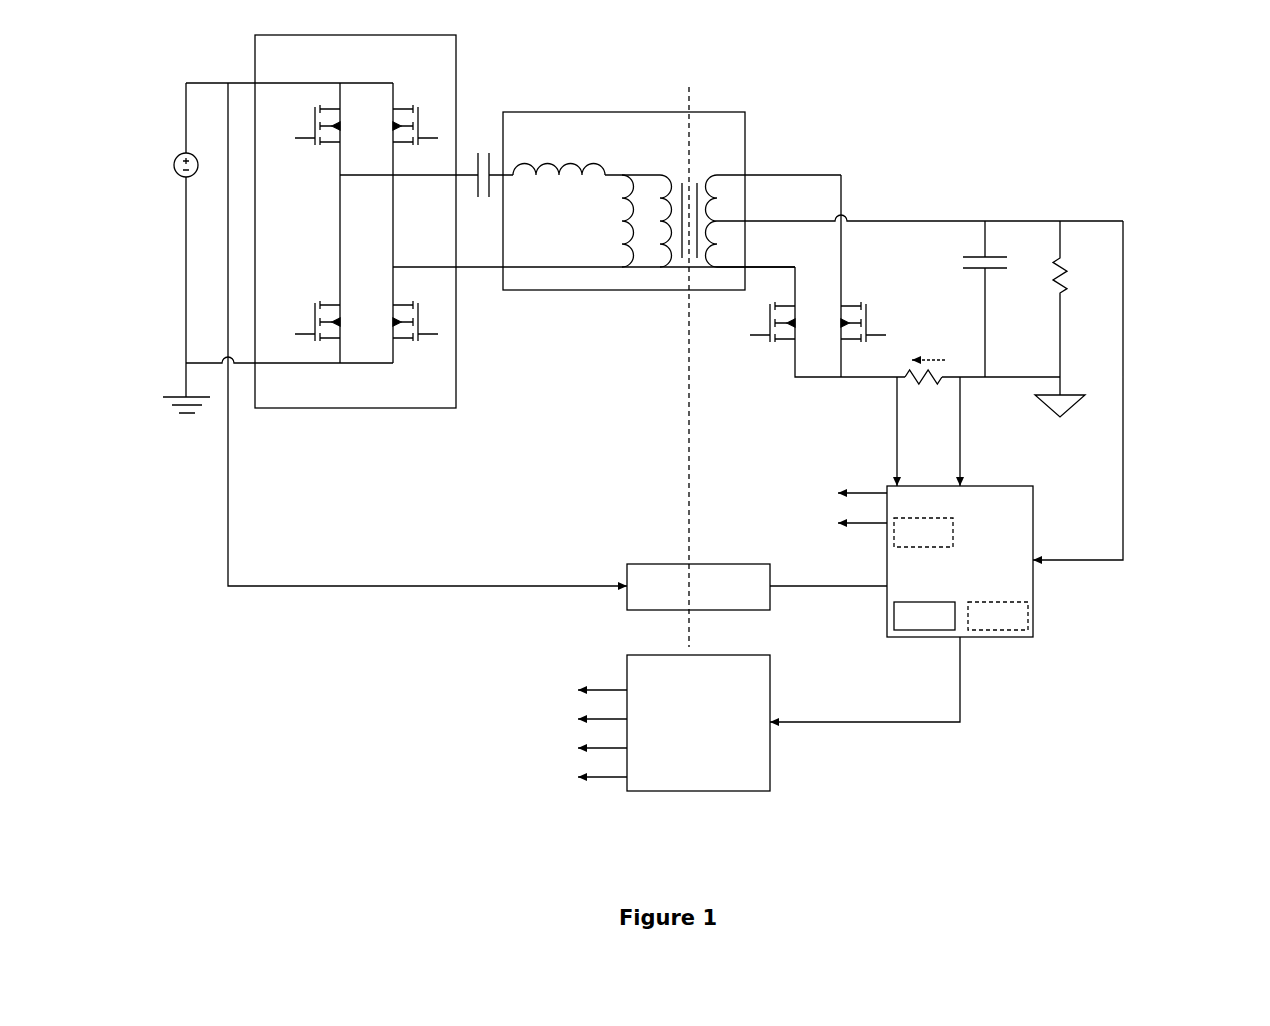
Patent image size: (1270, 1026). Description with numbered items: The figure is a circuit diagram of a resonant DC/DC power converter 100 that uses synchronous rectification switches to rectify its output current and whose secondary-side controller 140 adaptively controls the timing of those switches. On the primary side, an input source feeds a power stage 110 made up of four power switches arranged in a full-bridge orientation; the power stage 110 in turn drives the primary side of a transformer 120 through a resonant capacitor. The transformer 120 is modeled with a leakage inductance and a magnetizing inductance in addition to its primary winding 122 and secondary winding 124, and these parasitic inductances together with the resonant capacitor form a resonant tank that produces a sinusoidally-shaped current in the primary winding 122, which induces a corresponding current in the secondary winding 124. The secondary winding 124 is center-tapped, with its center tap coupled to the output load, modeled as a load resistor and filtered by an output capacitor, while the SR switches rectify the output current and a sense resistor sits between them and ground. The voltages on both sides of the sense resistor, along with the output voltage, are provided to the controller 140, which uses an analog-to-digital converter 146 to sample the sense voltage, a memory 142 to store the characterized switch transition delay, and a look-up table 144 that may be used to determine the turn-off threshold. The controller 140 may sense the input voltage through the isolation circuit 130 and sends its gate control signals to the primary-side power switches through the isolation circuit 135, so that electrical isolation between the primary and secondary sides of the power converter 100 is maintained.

The resonant DC/DC power converter 100 is at (1180, 72).
The power stage 110 is at (355, 207).
The transformer 120 is at (813, 187).
The primary winding 122 is at (666, 205).
The secondary winding 124 is at (911, 205).
The isolation circuit 130 is at (698, 571).
The isolation circuit 135 is at (698, 710).
The controller 140 is at (960, 546).
The memory 142 is at (924, 603).
The look-up table 144 is at (998, 603).
The analog-to-digital converter 146 is at (923, 520).